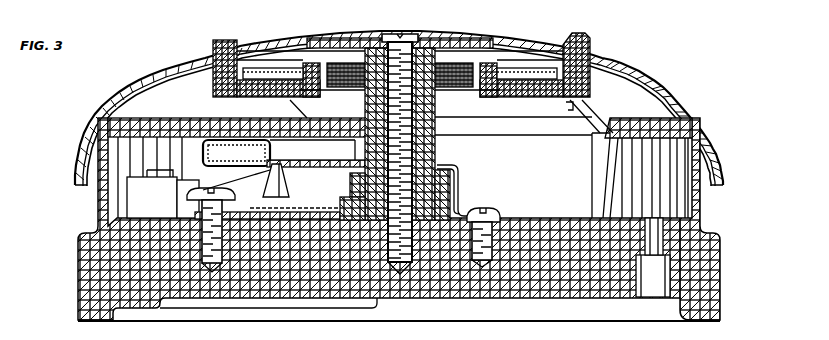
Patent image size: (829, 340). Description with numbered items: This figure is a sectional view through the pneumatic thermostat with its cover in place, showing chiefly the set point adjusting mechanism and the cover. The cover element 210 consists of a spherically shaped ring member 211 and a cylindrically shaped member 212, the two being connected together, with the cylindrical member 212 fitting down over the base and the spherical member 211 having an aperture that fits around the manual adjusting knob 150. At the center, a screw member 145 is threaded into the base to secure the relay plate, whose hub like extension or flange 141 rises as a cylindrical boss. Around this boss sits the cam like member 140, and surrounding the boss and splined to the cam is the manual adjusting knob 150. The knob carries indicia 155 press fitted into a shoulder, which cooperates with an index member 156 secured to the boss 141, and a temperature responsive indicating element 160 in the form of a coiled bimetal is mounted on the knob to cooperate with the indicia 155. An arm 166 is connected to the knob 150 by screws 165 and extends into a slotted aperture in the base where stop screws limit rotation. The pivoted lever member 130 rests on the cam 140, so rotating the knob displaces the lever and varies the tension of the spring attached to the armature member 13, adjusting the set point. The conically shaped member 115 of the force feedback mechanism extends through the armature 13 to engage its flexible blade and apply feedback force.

The armature member 13 is at (232, 150).
The conically shaped member 115 is at (287, 182).
The pivoted lever member 130 is at (458, 165).
The cam like member 140 is at (450, 191).
The hub like extension or flange 141 is at (418, 150).
The screw member 145 is at (441, 44).
The manual adjusting knob 150 is at (572, 33).
The indicia 155 is at (268, 73).
The index member 156 is at (343, 76).
The temperature responsive indicating element 160 is at (390, 34).
The screws 165 is at (570, 101).
The arm 166 is at (592, 160).
The cover element 210 is at (669, 27).
The spherically shaped ring member 211 is at (655, 78).
The cylindrically shaped member 212 is at (702, 207).